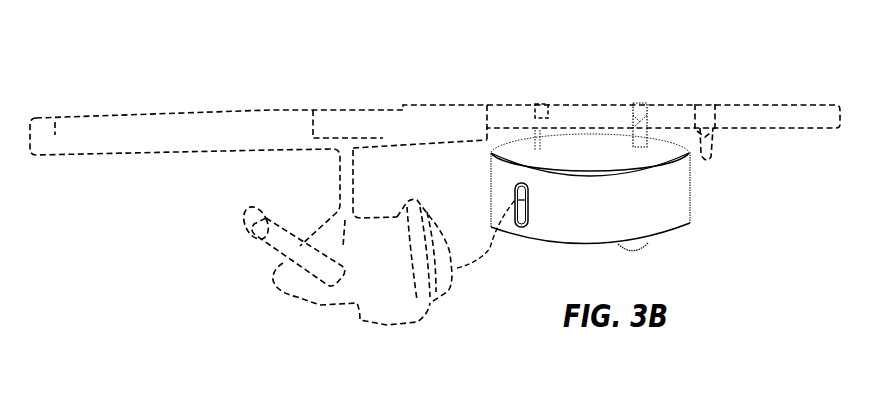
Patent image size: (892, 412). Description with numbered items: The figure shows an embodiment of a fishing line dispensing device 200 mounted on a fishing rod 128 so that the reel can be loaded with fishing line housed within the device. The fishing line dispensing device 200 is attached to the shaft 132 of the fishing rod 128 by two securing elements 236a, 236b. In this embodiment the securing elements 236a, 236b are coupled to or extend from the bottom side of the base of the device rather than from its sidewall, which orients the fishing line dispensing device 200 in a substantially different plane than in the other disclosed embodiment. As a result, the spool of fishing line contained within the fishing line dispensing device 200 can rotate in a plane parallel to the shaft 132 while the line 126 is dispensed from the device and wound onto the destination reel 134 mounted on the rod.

The fishing rod 128 is at (240, 76).
The shaft 132 is at (778, 117).
The destination reel 134 is at (372, 338).
The line 126 is at (480, 271).
The fishing line dispensing device 200 is at (703, 242).
The securing element 236a is at (540, 105).
The securing element 236b is at (643, 103).